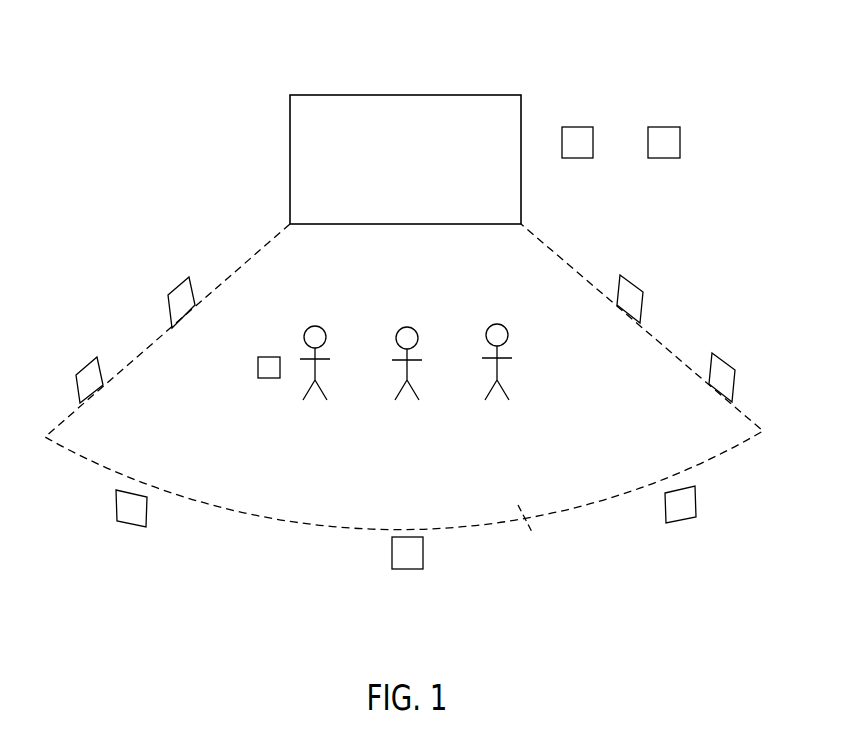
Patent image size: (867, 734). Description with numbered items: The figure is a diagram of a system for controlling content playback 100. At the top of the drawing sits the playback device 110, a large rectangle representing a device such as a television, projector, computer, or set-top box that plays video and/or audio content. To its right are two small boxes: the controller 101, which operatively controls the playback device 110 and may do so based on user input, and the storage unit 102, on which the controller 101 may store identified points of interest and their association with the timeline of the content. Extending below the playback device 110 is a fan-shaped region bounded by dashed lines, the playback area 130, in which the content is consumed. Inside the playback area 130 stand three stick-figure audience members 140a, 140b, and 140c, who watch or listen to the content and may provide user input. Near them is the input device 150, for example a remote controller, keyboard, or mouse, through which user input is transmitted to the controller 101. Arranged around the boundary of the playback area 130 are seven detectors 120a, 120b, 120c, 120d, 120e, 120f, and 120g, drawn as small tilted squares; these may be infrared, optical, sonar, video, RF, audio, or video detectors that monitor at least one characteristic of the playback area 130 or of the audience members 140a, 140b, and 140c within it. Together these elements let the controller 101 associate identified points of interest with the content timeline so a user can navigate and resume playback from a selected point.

The system for controlling content playback 100 is at (174, 45).
The playback device 110 is at (406, 95).
The controller 101 is at (578, 127).
The storage unit 102 is at (665, 127).
The detector 120a is at (633, 282).
The detector 120b is at (725, 360).
The detector 120c is at (680, 523).
The detector 120d is at (407, 570).
The detector 120e is at (130, 528).
The detector 120f is at (85, 368).
The detector 120g is at (177, 285).
The playback area 130 is at (530, 531).
The audience member 140a is at (498, 323).
The audience member 140b is at (407, 326).
The audience member 140c is at (313, 325).
The input device 150 is at (268, 356).